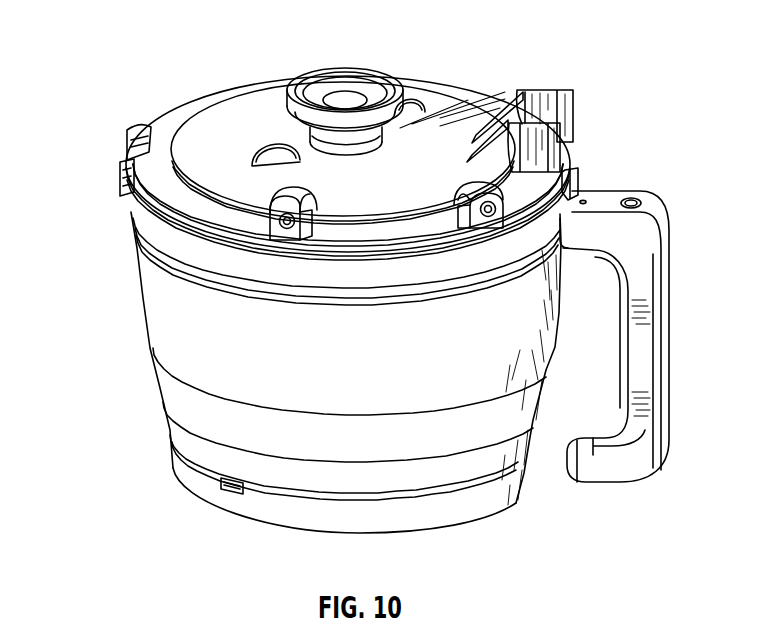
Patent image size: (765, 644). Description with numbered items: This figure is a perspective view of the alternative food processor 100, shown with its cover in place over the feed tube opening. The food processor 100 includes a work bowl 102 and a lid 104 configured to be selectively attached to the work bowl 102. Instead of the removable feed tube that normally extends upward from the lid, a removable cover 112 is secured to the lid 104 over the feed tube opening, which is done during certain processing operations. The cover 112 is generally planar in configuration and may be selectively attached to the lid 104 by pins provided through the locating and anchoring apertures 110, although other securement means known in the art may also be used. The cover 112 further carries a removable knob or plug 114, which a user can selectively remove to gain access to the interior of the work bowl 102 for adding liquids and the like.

The food processor 100 is at (120, 21).
The work bowl 102 is at (160, 330).
The lid 104 is at (195, 101).
The locating and anchoring apertures 110 is at (282, 232).
The removable cover 112 is at (458, 93).
The removable knob or plug 114 is at (343, 103).